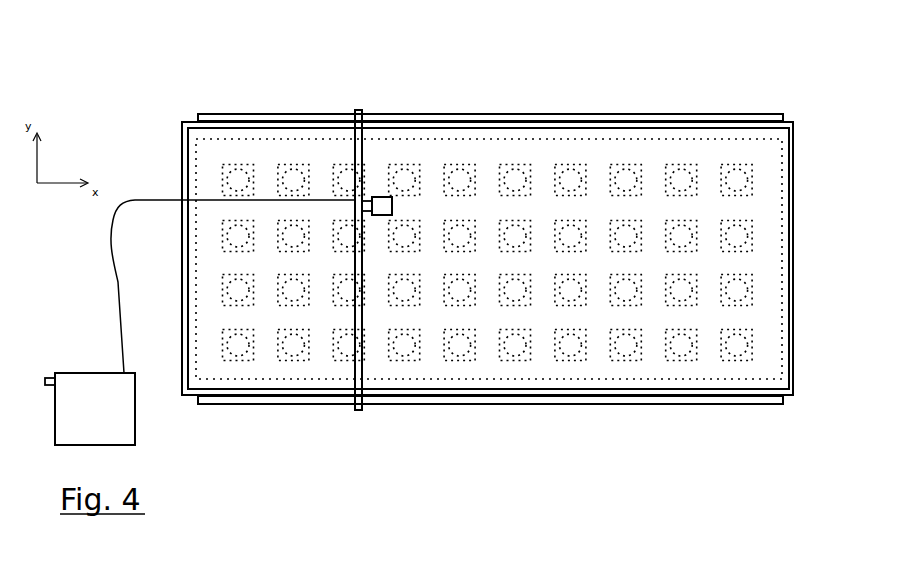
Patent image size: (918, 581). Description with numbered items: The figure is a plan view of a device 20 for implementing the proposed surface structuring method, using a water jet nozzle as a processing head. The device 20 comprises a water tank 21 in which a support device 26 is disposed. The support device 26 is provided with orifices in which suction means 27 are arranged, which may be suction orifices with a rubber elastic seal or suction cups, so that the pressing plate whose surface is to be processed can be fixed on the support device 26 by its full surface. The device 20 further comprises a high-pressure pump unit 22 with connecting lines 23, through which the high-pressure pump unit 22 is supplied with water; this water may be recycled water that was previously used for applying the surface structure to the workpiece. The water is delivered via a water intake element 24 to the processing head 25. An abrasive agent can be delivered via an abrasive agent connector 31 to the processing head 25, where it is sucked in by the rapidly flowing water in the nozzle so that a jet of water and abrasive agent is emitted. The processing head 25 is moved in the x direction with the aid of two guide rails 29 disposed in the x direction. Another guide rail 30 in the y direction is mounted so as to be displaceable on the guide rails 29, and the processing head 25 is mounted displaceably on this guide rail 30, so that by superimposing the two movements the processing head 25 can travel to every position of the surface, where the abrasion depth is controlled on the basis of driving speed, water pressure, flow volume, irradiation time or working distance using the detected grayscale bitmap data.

The device 20 is at (487, 248).
The water tank 21 is at (783, 398).
The high-pressure pump unit 22 is at (127, 435).
The connecting lines 23 is at (48, 378).
The water intake element 24 is at (142, 201).
The processing head 25 is at (388, 203).
The support device 26 is at (489, 307).
The suction means 27 is at (488, 331).
The guide rails 29 is at (776, 117).
The guide rail 30 is at (356, 112).
The abrasive agent connector 31 is at (382, 199).